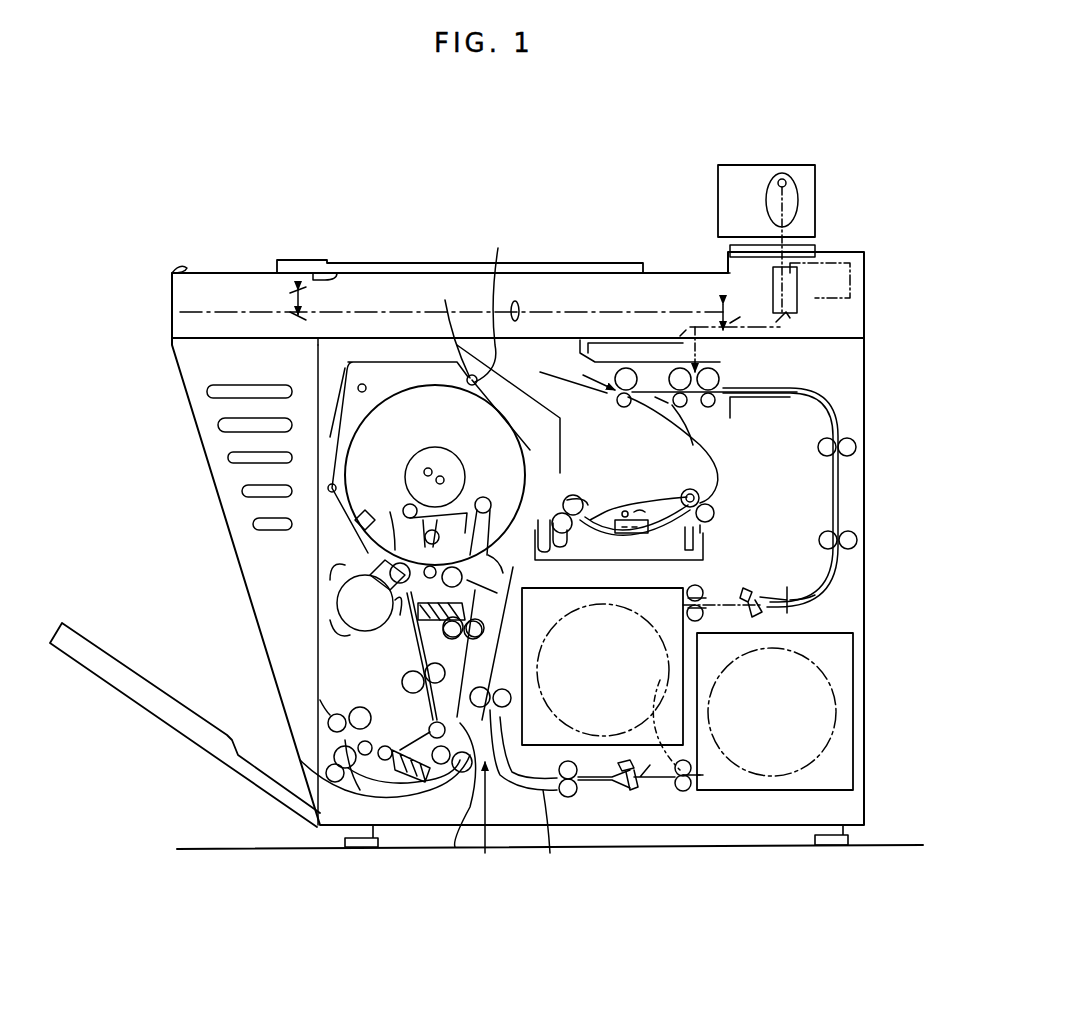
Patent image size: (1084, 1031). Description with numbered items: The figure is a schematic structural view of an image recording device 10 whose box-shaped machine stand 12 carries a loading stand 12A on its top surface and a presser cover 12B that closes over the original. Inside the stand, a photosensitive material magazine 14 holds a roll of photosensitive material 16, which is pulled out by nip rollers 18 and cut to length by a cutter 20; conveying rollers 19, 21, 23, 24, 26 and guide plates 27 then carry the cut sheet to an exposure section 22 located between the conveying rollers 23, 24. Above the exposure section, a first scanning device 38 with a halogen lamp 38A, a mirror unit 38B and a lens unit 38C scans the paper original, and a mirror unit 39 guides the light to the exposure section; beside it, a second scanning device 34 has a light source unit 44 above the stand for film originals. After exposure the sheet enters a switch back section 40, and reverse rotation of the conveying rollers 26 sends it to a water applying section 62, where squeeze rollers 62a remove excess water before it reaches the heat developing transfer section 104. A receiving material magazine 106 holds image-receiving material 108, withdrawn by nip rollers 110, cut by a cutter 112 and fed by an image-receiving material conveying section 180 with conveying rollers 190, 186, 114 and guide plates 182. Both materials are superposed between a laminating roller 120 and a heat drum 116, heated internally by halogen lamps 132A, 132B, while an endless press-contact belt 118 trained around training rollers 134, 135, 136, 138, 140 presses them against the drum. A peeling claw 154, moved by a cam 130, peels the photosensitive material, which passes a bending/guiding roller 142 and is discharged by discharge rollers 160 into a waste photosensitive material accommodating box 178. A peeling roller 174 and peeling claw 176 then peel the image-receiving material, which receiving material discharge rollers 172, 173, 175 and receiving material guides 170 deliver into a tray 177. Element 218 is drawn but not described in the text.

The image recording device 10 is at (150, 262).
The machine stand 12 is at (868, 385).
The loading stand 12A is at (170, 267).
The presser cover 12B is at (600, 262).
The photosensitive material magazine 14 is at (528, 748).
The photosensitive material 16 is at (680, 786).
The nip rollers 18 is at (703, 592).
The conveying roller 19 is at (858, 547).
The cutter 20 is at (752, 585).
The conveying roller 21 is at (858, 452).
The exposure section 22 is at (700, 414).
The conveying roller 23 is at (730, 412).
The conveying roller 24 is at (716, 447).
The conveying rollers 26 is at (627, 368).
The guide plates 27 is at (840, 503).
The second scanning device 34 is at (710, 222).
The first scanning device 38 is at (418, 297).
The halogen lamp 38A is at (332, 272).
The mirror unit 38B is at (292, 302).
The lens unit 38C is at (523, 305).
The mirror unit 39 is at (716, 310).
The switch back section 40 is at (563, 365).
The light source unit 44 is at (805, 205).
The water applying section 62 is at (645, 495).
The squeeze rollers 62a is at (632, 488).
The heat developing transfer section 104 is at (330, 447).
The receiving material magazine 106 is at (855, 657).
The image-receiving material 108 is at (840, 732).
The nip rollers 110 is at (690, 790).
The cutter 112 is at (622, 790).
The conveying roller 114 is at (535, 573).
The heat drum 116 is at (358, 386).
The endless press-contact belt 118 is at (450, 326).
The laminating roller 120 is at (562, 497).
The cam 130 is at (460, 505).
The halogen lamp 132A is at (428, 467).
The halogen lamp 132B is at (440, 475).
The training roller 134 is at (548, 447).
The training roller 135 is at (328, 488).
The training roller 136 is at (500, 299).
The training roller 138 is at (468, 380).
The training roller 140 is at (390, 540).
The bending/guiding roller 142 is at (370, 572).
The peeling claw 154 is at (345, 595).
The discharge rollers 160 is at (335, 715).
The receiving material guides 170 is at (455, 847).
The receiving material discharge roller 172 is at (500, 688).
The receiving material discharge roller 173 is at (458, 770).
The peeling roller 174 is at (490, 690).
The receiving material discharge roller 175 is at (340, 757).
The peeling claw 176 is at (480, 625).
The tray 177 is at (160, 678).
The waste photosensitive material accommodating box 178 is at (222, 512).
The image-receiving material conveying section 180 is at (485, 725).
The guide plates 182 is at (550, 853).
The conveying roller 186 is at (507, 790).
The conveying roller 190 is at (570, 797).
The sensor 218 is at (782, 320).